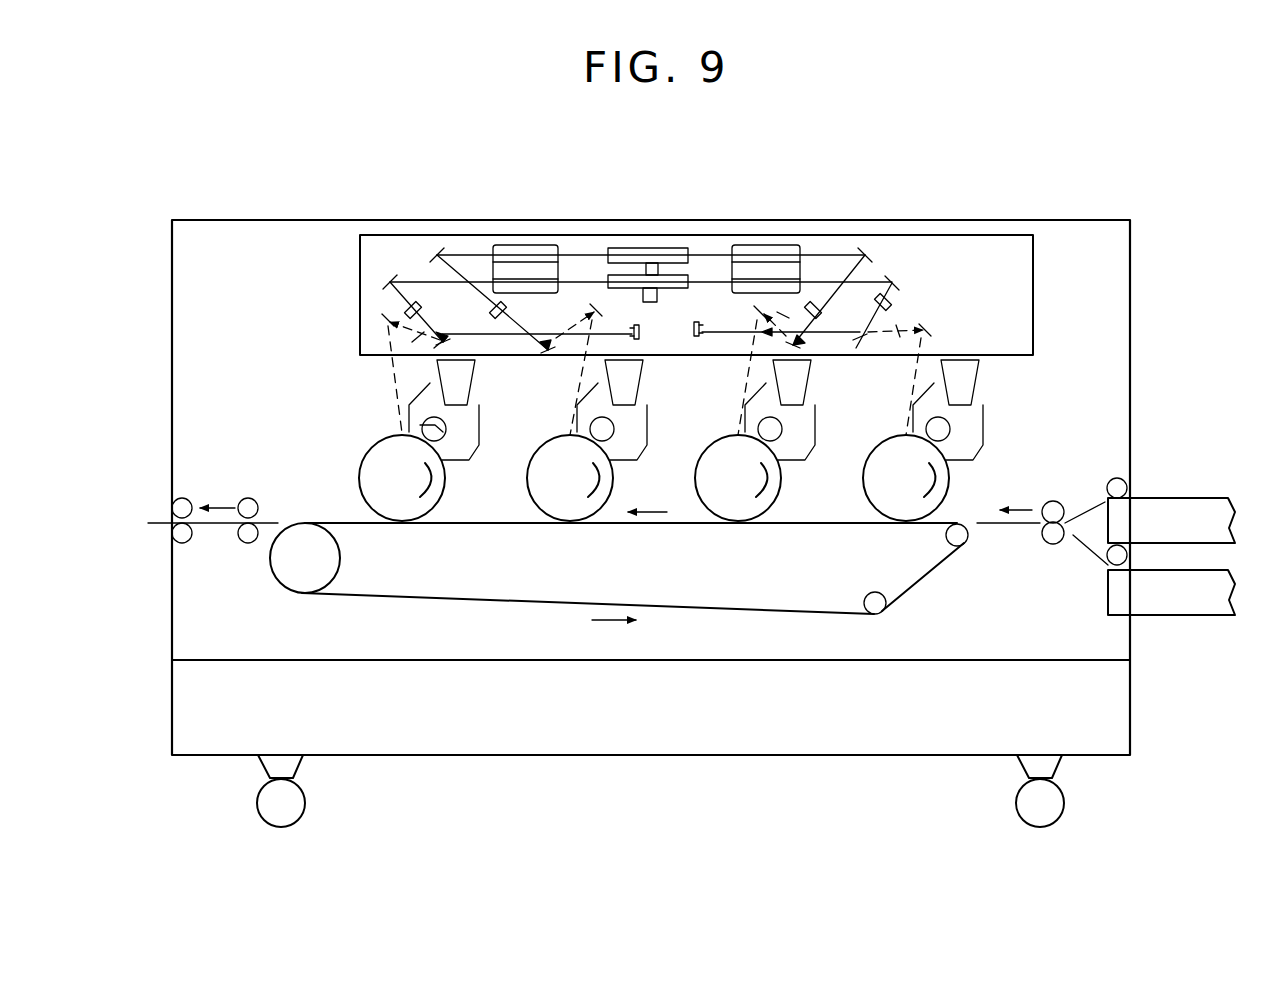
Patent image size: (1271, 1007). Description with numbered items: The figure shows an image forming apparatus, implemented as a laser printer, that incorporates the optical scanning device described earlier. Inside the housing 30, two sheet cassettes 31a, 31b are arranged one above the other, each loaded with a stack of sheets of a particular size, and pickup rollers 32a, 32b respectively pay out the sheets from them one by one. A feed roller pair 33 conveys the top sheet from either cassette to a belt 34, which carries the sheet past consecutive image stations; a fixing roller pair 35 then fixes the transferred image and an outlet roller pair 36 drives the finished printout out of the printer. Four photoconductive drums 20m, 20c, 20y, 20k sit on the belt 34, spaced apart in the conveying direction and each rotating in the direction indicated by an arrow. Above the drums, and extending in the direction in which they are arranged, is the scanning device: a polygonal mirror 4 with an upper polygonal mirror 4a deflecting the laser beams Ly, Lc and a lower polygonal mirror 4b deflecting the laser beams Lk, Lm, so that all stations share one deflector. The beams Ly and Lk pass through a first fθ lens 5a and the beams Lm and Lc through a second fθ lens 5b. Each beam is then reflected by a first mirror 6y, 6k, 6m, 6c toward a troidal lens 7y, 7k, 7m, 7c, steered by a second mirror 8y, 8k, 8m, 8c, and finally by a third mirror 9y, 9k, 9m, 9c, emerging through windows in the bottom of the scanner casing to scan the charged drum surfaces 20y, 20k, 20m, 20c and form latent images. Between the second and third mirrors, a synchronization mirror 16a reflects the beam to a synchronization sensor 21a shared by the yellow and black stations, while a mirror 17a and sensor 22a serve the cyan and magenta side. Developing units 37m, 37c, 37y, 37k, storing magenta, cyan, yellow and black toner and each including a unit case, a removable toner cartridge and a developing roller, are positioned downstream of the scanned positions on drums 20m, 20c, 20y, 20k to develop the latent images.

The housing 30 is at (1136, 266).
The polygonal mirror 4 is at (646, 245).
The upper polygonal mirror 4a is at (625, 248).
The lower polygonal mirror 4b is at (673, 282).
The first fθ lens 5a is at (523, 245).
The second fθ lens 5b is at (762, 245).
The laser beam Lk is at (420, 282).
The laser beam Ly is at (477, 255).
The laser beam Lc is at (827, 255).
The laser beam Lm is at (890, 282).
The first mirror 6k is at (390, 282).
The first mirror 6y is at (437, 255).
The first mirror 6c is at (865, 255).
The first mirror 6m is at (893, 283).
The troidal lens 7k is at (422, 307).
The troidal lens 7y is at (445, 322).
The troidal lens 7c is at (822, 313).
The troidal lens 7m is at (892, 305).
The second mirror 8k is at (446, 344).
The second mirror 8y is at (548, 352).
The second mirror 8c is at (798, 350).
The second mirror 8m is at (860, 346).
The third mirror 9k is at (385, 320).
The third mirror 9y is at (586, 322).
The third mirror 9c is at (758, 316).
The third mirror 9m is at (932, 328).
The mirror for synchronization 16a is at (508, 312).
The mirror for synchronization 17a is at (780, 330).
The synchronization sensor 21a is at (641, 333).
The synchronization sensor 22a is at (697, 322).
The photoconductive drum 20k is at (372, 450).
The photoconductive drum 20y is at (548, 450).
The photoconductive drum 20c is at (716, 450).
The photoconductive drum 20m is at (884, 456).
The developing unit 37k is at (473, 463).
The developing unit 37y is at (642, 463).
The developing unit 37c is at (810, 465).
The developing unit 37m is at (980, 462).
The belt 34 is at (686, 526).
The fixing roller pair 35 is at (262, 495).
The outlet roller pair 36 is at (186, 495).
The feed roller pair 33 is at (1040, 544).
The pickup roller 32a is at (1112, 478).
The pickup roller 32b is at (1108, 563).
The sheet cassette 31a is at (1160, 505).
The sheet cassette 31b is at (1165, 607).